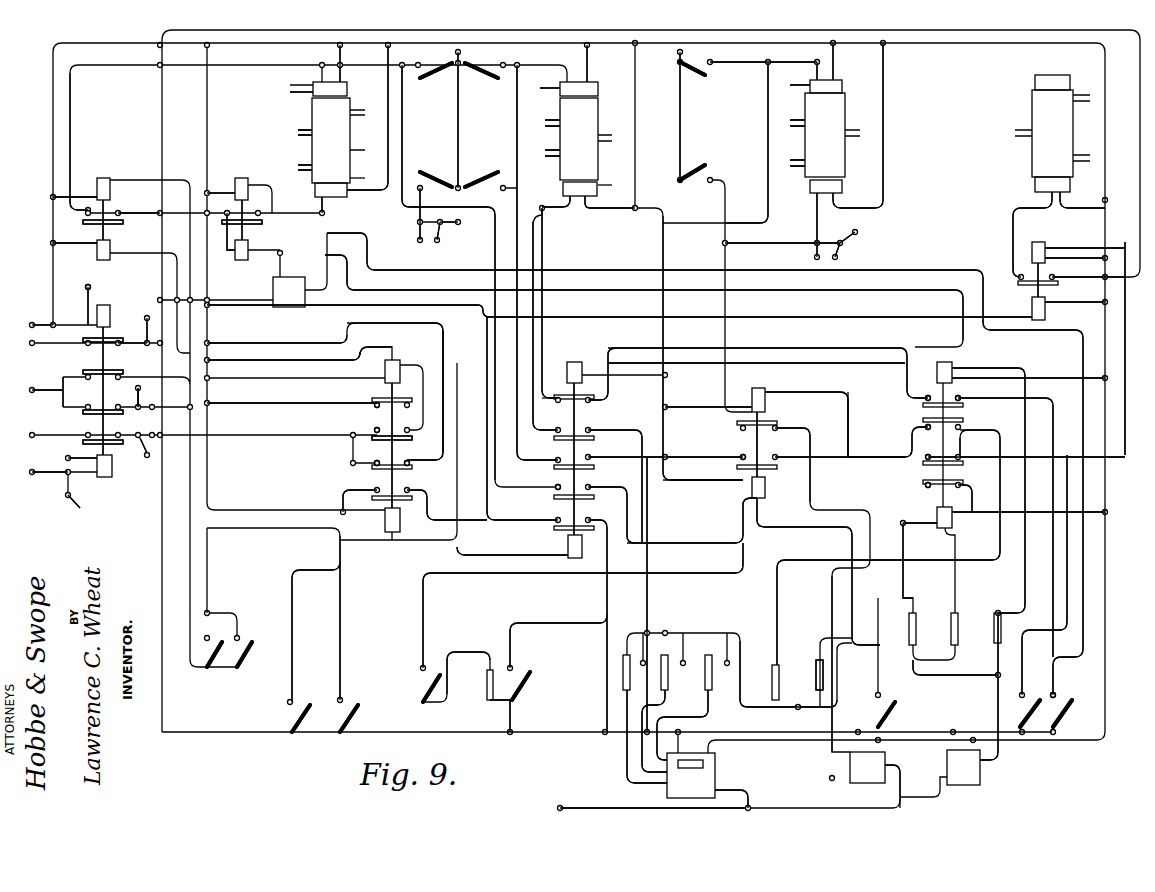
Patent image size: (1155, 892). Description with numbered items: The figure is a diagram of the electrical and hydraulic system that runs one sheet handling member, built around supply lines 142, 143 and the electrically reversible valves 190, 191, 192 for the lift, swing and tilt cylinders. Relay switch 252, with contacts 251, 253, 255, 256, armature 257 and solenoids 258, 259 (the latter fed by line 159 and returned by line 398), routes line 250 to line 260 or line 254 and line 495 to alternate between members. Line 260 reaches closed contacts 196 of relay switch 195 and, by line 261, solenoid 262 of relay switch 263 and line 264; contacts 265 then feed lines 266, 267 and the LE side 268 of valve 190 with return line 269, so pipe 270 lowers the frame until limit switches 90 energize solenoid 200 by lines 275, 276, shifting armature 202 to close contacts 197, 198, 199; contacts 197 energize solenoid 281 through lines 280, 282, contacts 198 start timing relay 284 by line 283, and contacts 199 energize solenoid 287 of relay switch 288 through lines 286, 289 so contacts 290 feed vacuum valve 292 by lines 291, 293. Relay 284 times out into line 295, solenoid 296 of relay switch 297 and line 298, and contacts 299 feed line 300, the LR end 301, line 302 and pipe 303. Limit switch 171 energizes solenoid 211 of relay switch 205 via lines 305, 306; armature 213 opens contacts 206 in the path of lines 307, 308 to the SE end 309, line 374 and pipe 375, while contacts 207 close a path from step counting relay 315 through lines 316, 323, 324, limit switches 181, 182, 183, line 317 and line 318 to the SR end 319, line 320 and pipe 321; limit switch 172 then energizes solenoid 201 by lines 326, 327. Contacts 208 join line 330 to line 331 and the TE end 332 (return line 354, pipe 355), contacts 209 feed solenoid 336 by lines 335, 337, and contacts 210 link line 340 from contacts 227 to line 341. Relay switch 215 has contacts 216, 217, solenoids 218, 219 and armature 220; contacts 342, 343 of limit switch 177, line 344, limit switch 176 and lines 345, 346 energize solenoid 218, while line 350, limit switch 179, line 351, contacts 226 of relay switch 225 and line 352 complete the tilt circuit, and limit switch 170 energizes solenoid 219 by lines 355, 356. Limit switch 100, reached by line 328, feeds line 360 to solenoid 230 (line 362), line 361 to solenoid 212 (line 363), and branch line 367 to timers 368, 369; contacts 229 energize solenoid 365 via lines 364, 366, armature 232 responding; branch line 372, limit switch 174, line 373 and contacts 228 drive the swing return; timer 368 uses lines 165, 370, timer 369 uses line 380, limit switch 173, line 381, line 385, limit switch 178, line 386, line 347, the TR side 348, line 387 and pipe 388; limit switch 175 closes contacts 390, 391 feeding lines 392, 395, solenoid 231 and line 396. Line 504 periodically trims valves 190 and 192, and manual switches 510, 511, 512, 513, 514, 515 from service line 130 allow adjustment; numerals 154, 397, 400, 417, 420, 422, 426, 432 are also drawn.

The limit switches 90 is at (214, 668).
The limit switch 100 is at (822, 680).
The service line 130 is at (459, 134).
The supply line 142 is at (160, 132).
The supply line 143 is at (53, 155).
The conductor 154 is at (46, 483).
The line 159 is at (73, 288).
The line 165 is at (585, 805).
The limit switch 170 is at (891, 712).
The limit switch 171 is at (300, 708).
The limit switch 172 is at (350, 708).
The limit switch 173 is at (994, 640).
The limit switch 174 is at (967, 629).
The limit switch 175 is at (1063, 689).
The limit switch 176 is at (428, 685).
The limit switch 177 is at (535, 695).
The limit switch 178 is at (925, 629).
The limit switch 179 is at (763, 682).
The limit switch 181 is at (722, 672).
The limit switch 182 is at (678, 672).
The limit switch 183 is at (639, 672).
The electrically reversible valve 190 is at (350, 118).
The electrically reversible valve 191 is at (599, 118).
The electrically reversible valve 192 is at (845, 115).
The relay switch 195 is at (342, 476).
The normally closed contacts 196 is at (373, 402).
The normally open contacts 197 is at (373, 428).
The normally open contacts 198 is at (367, 474).
The normally open contacts 199 is at (420, 474).
The solenoid 200 is at (400, 522).
The solenoid 201 is at (385, 373).
The armature 202 is at (390, 440).
The relay switch 205 is at (546, 501).
The normally closed contacts 206 is at (552, 407).
The normally open contacts 207 is at (590, 430).
The normally open contacts 208 is at (592, 460).
The normally open contacts 209 is at (592, 521).
The normally open contacts 210 is at (592, 490).
The solenoid 211 is at (575, 558).
The solenoid 212 is at (572, 360).
The armature 213 is at (580, 411).
The relay switch 215 is at (734, 489).
The normally closed contacts 216 is at (780, 425).
The normally open contacts 217 is at (741, 455).
The solenoid 218 is at (759, 498).
The solenoid 219 is at (760, 388).
The armature 220 is at (764, 455).
The relay switch 225 is at (899, 420).
The normally closed contacts 226 is at (924, 429).
The normally closed contacts 227 is at (880, 480).
The normally open contacts 228 is at (960, 396).
The normally open contacts 229 is at (974, 491).
The solenoid 230 is at (937, 514).
The solenoid 231 is at (943, 360).
The armature 232 is at (938, 440).
The line 250 is at (39, 394).
The contacts 251 is at (120, 375).
The relay switch 252 is at (54, 370).
The open contacts 253 is at (85, 408).
The line 254 is at (122, 396).
The closed contact pair 255 is at (94, 345).
The open contact pair 256 is at (120, 434).
The armature 257 is at (131, 345).
The solenoid 258 is at (108, 477).
The solenoid 259 is at (108, 305).
The line 260 is at (240, 403).
The line 261 is at (244, 360).
The solenoid 262 is at (110, 247).
The double-action relay switch 263 is at (98, 243).
The line 264 is at (75, 234).
The contacts 265 is at (122, 222).
The line 266 is at (139, 204).
The line 267 is at (70, 133).
The LE side 268 is at (292, 95).
The line 269 is at (350, 75).
The pipe 270 is at (291, 126).
The line 275 is at (208, 566).
The line 276 is at (360, 501).
The line 280 is at (258, 343).
The solenoid 281 is at (106, 184).
The line 282 is at (84, 194).
The line 283 is at (440, 432).
The timing relay 284 is at (289, 292).
The line 286 is at (833, 311).
The solenoid 287 is at (1045, 313).
The double action relay switch 288 is at (1028, 292).
The line 289 is at (1062, 302).
The contacts 290 is at (1056, 276).
The line 291 is at (1012, 215).
The vacuum valve 292 is at (1032, 153).
The line 293 is at (1075, 206).
The line 295 is at (300, 262).
The solenoid 296 is at (244, 260).
The relay switch 297 is at (256, 231).
The line 298 is at (222, 239).
The contacts 299 is at (235, 229).
The line 300 is at (302, 201).
The LR end 301 is at (365, 183).
The line 302 is at (367, 126).
The pipe 303 is at (296, 177).
The line 305 is at (293, 580).
The line 306 is at (505, 520).
The line 307 is at (555, 210).
The line 308 is at (620, 348).
The SE end 309 is at (613, 185).
The step counting relay 315 is at (691, 775).
The line 316 is at (710, 710).
The line 317 is at (634, 425).
The line 318 is at (517, 106).
The SR end 319 is at (544, 87).
The line 320 is at (588, 63).
The pipe 321 is at (541, 125).
The line 323 is at (668, 731).
The line 324 is at (647, 733).
The line 326 is at (340, 636).
The line 327 is at (335, 394).
The line 328 is at (755, 707).
The line 330 is at (688, 457).
The line 331 is at (756, 205).
The TE end 332 is at (791, 82).
The line 335 is at (552, 530).
The solenoid 336 is at (244, 178).
The line 337 is at (221, 192).
The line 340 is at (686, 543).
The line 341 is at (402, 130).
The contacts 342 is at (488, 700).
The contacts 343 is at (526, 680).
The line 344 is at (473, 650).
The line 345 is at (424, 605).
The line 346 is at (690, 480).
The line 347 is at (770, 243).
The TR side 348 is at (805, 216).
The line 350 is at (540, 622).
The line 351 is at (774, 596).
The line 352 is at (840, 456).
The line 354 is at (834, 63).
The pipe 355 is at (798, 392).
The line 356 is at (688, 407).
The line 360 is at (908, 525).
The line 361 is at (837, 414).
The line 362 is at (958, 513).
The line 363 is at (615, 373).
The line 364 is at (1066, 248).
The solenoid 365 is at (1038, 242).
The line 366 is at (1075, 250).
The branch line 367 is at (830, 745).
The timer 368 is at (867, 767).
The timer 369 is at (963, 767).
The line 370 is at (742, 785).
The branch line 372 is at (864, 645).
The line 373 is at (980, 399).
The line 374 is at (612, 207).
The pipe 375 is at (540, 150).
The line 380 is at (999, 752).
The line 381 is at (358, 291).
The line 385 is at (935, 675).
The line 386 is at (805, 526).
The line 387 is at (883, 162).
The pipe 388 is at (790, 171).
The contacts 390 is at (1066, 714).
The contacts 391 is at (1025, 710).
The line 392 is at (367, 252).
The line 395 is at (1035, 368).
The line 396 is at (1030, 378).
The conductor 397 is at (77, 449).
The line 398 is at (60, 320).
The switch 400 is at (88, 506).
The contact 417 is at (139, 389).
The contact 420 is at (455, 228).
The contact 422 is at (815, 52).
The contact 426 is at (540, 186).
The contact 432 is at (644, 243).
The line 495 is at (92, 287).
The line 504 is at (418, 230).
The manual switch 510 is at (437, 78).
The manual switch 511 is at (436, 170).
The manual switch 512 is at (481, 78).
The manual switch 513 is at (478, 172).
The manual switch 514 is at (696, 77).
The manual switch 515 is at (696, 164).